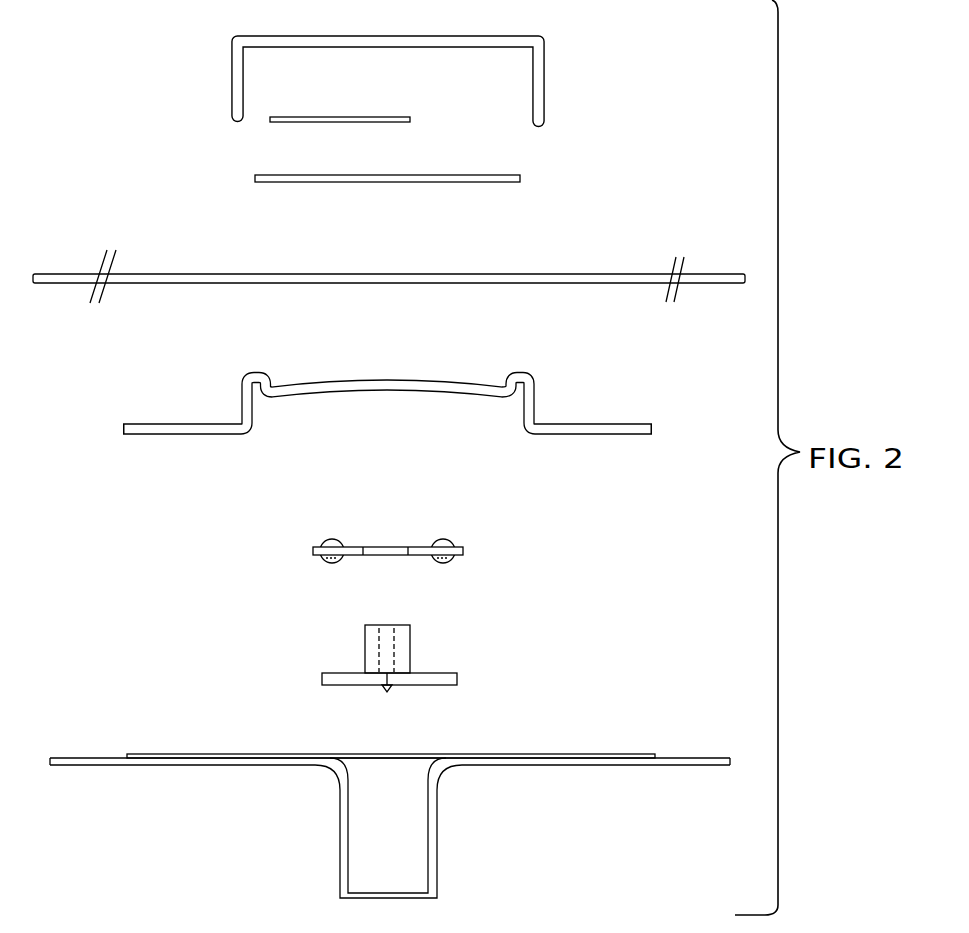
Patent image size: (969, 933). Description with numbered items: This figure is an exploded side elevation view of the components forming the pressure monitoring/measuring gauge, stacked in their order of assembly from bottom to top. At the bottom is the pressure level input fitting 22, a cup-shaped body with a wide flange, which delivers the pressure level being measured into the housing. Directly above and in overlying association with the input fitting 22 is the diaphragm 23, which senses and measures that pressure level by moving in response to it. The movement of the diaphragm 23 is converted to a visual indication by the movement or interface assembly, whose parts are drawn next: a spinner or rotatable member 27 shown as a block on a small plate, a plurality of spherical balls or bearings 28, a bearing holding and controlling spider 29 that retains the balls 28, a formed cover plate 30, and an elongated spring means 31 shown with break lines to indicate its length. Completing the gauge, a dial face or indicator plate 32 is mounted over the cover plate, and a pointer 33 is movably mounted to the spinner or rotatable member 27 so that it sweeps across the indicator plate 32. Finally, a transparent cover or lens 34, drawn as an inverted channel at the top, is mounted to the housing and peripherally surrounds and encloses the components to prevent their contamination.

The pressure level input fitting 22 is at (432, 875).
The diaphragm 23 is at (413, 757).
The spinner or rotatable member 27 is at (407, 660).
The spherical balls or bearings 28 is at (332, 563).
The bearing holding and controlling spider 29 is at (362, 545).
The cover plate 30 is at (438, 383).
The spring means 31 is at (357, 267).
The dial face or indicator plate 32 is at (493, 182).
The pointer 33 is at (395, 122).
The transparent cover or lens 34 is at (540, 88).